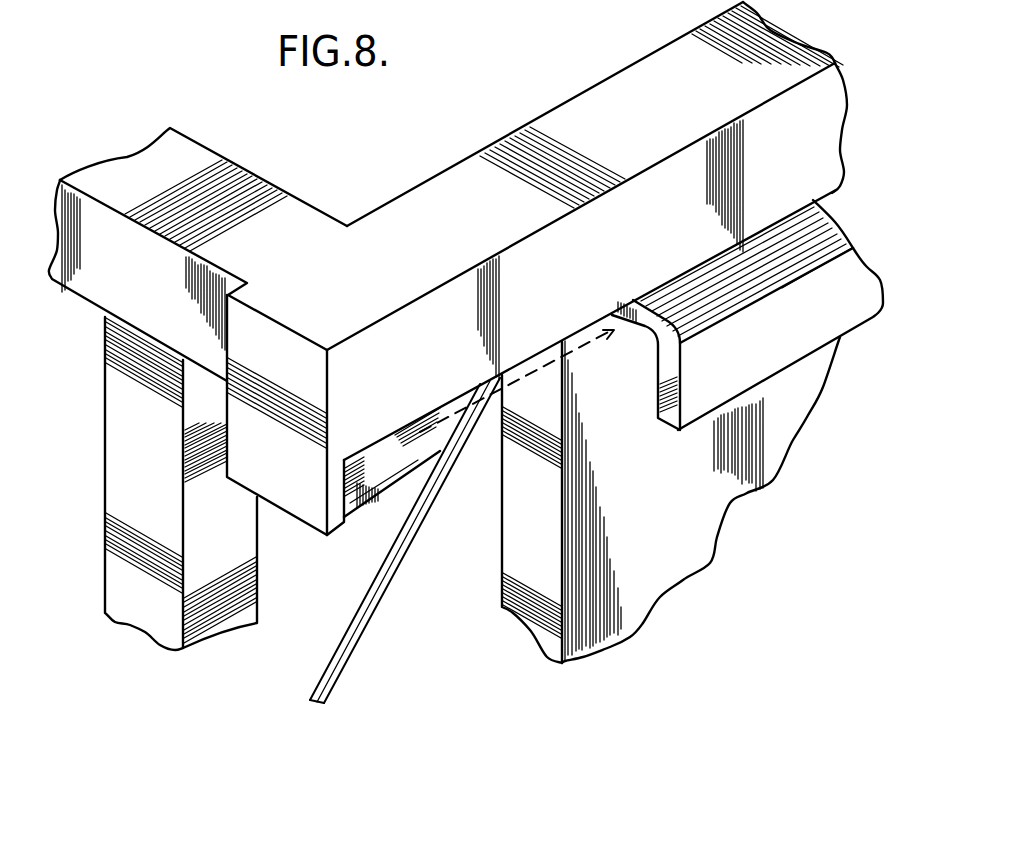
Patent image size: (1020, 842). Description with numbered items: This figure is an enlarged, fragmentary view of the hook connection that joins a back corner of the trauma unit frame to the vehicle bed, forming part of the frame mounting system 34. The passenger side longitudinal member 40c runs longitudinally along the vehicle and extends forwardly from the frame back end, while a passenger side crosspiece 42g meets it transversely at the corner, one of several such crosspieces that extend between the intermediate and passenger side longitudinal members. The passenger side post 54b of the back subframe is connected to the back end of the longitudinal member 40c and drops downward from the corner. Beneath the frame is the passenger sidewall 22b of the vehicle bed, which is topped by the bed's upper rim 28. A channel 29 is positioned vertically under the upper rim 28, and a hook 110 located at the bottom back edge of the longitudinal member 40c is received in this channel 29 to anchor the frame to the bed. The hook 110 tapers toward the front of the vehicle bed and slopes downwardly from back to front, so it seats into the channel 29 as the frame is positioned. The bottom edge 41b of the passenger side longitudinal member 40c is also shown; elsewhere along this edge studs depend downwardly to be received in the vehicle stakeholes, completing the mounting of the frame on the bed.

The frame mounting system 34 is at (366, 172).
The passenger side crosspiece 42g is at (276, 243).
The passenger side longitudinal member 40c is at (663, 238).
The hook 110 is at (350, 520).
The passenger side post 54b is at (160, 492).
The passenger sidewall 22b is at (667, 538).
The bottom edge 41b is at (762, 315).
The upper rim 28 is at (681, 373).
The channel 29 is at (658, 341).